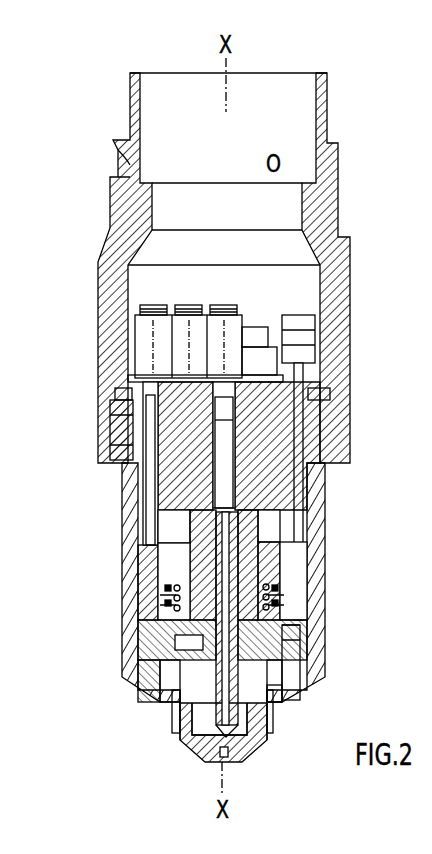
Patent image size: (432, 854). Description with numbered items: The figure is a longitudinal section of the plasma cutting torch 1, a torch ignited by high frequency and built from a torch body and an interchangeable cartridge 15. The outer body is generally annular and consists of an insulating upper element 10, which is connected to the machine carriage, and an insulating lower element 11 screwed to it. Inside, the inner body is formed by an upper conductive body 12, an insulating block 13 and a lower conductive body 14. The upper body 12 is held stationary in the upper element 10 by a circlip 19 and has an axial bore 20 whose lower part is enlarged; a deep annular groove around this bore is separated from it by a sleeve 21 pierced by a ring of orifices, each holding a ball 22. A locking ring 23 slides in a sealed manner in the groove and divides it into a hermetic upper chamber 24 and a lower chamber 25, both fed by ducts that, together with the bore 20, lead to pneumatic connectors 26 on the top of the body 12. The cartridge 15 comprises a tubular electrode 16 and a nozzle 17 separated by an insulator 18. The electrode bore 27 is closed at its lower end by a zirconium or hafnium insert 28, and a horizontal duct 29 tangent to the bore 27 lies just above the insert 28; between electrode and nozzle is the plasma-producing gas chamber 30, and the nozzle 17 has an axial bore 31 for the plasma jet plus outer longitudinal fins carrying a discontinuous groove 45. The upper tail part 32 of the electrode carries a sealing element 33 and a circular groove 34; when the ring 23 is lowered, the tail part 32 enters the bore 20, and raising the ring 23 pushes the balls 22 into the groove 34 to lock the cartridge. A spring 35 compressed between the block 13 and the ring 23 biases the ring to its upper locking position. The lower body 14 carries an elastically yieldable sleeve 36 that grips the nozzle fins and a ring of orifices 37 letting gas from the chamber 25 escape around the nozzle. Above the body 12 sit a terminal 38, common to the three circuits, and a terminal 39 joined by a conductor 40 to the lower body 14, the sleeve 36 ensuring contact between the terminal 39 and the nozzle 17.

The torch 1 is at (349, 150).
The upper element 10 is at (322, 227).
The lower element 11 is at (130, 578).
The upper conductive body 12 is at (128, 421).
The insulating block 13 is at (158, 625).
The lower conductive body 14 is at (133, 660).
The interchangeable cartridge 15 is at (175, 705).
The electrode 16 is at (293, 634).
The nozzle 17 is at (262, 738).
The insulator 18 is at (268, 690).
The circlip 19 is at (127, 390).
The axial bore 20 is at (228, 437).
The sleeve 21 is at (168, 603).
The ball 22 is at (196, 572).
The locking ring 23 is at (275, 591).
The upper chamber 24 is at (270, 530).
The lower chamber 25 is at (282, 608).
The pneumatic connectors 26 is at (232, 327).
The bore 27 is at (265, 648).
The insert 28 is at (195, 748).
The horizontal duct 29 is at (178, 727).
The plasma-producing gas chamber 30 is at (247, 755).
The axial bore 31 is at (232, 757).
The tail part 32 is at (192, 537).
The sealing element 33 is at (327, 485).
The circular groove 34 is at (270, 568).
The spring 35 is at (173, 617).
The elastically yieldable sleeve 36 is at (150, 700).
The orifices 37 is at (127, 684).
The terminal 38 is at (253, 338).
The terminal 39 is at (300, 355).
The conductor 40 is at (330, 392).
The discontinuous groove 45 is at (268, 724).